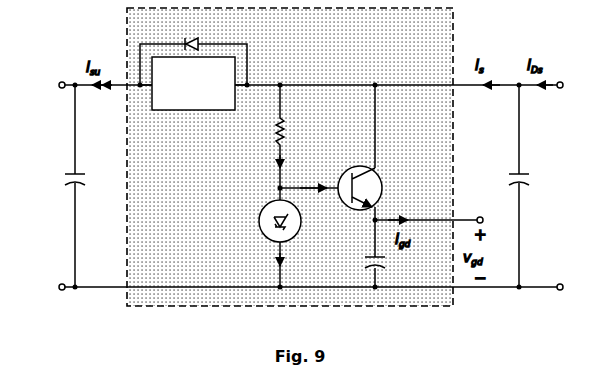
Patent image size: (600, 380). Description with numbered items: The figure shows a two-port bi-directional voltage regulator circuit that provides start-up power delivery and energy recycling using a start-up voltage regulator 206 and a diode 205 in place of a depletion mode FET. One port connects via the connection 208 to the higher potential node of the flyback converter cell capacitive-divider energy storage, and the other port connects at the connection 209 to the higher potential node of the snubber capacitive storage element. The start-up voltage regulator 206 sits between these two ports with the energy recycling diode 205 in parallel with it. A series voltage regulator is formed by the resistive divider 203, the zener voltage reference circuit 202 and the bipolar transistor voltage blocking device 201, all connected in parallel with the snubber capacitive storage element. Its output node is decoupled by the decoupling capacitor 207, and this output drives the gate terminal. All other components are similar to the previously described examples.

The voltage blocking device 201 is at (402, 166).
The voltage reference circuit 202 is at (248, 241).
The resistive divider 203 is at (244, 146).
The diode 205 is at (214, 26).
The start-up voltage regulator 206 is at (245, 70).
The decoupling capacitor 207 is at (390, 259).
The connection to the higher potential node of the capacitive-divider energy storage 208 is at (90, 197).
The connection to the higher potential node of the snubber capacitive storage elemen 209 is at (524, 193).